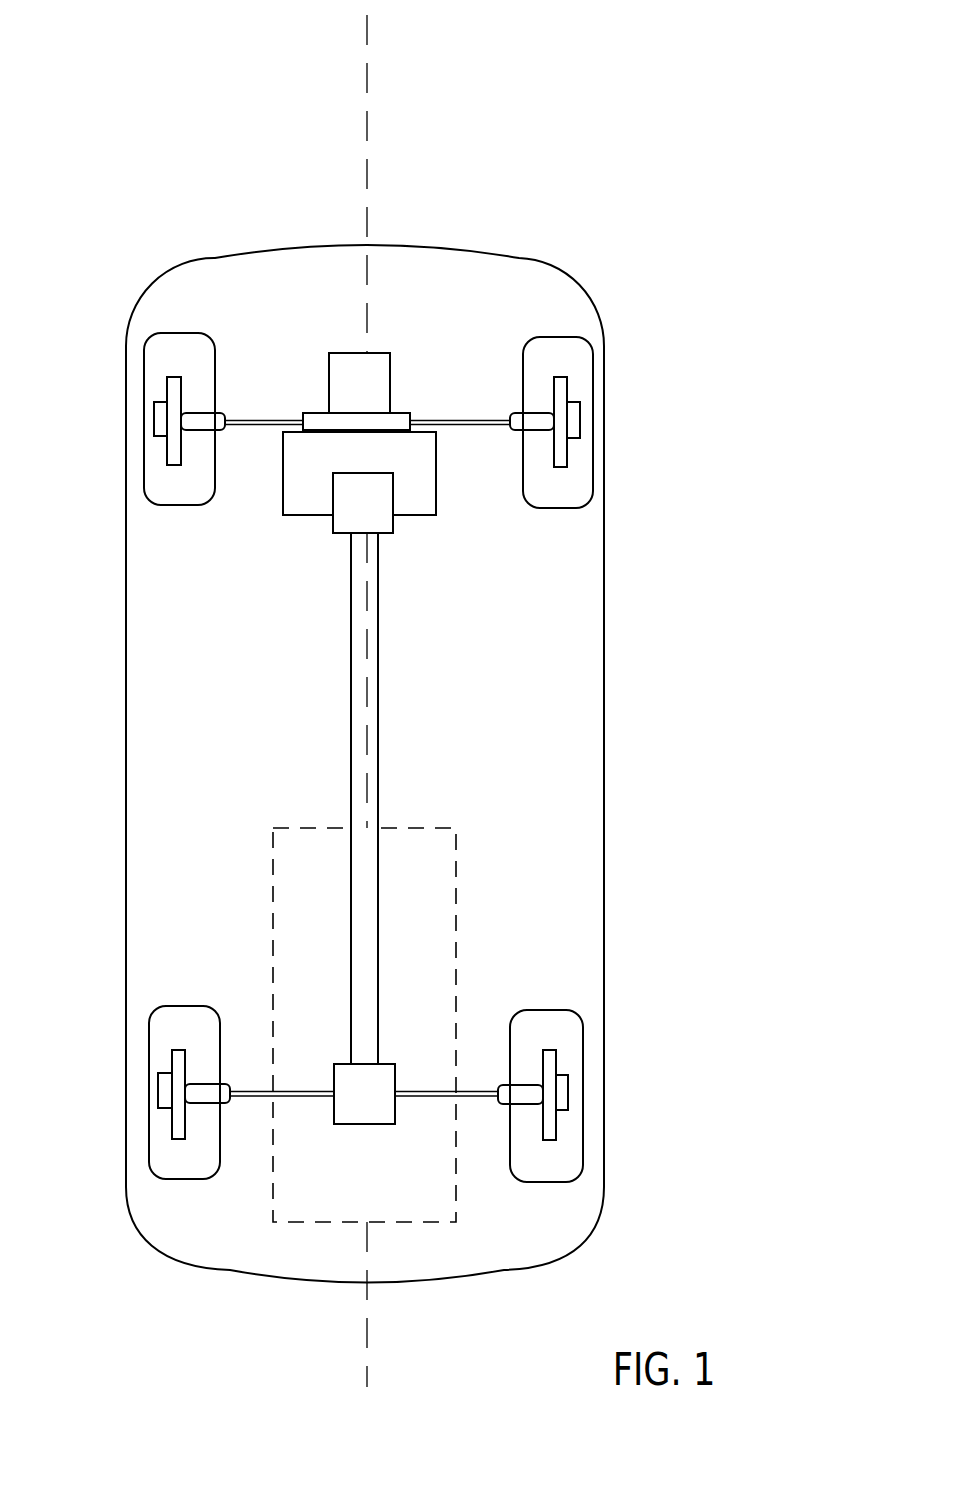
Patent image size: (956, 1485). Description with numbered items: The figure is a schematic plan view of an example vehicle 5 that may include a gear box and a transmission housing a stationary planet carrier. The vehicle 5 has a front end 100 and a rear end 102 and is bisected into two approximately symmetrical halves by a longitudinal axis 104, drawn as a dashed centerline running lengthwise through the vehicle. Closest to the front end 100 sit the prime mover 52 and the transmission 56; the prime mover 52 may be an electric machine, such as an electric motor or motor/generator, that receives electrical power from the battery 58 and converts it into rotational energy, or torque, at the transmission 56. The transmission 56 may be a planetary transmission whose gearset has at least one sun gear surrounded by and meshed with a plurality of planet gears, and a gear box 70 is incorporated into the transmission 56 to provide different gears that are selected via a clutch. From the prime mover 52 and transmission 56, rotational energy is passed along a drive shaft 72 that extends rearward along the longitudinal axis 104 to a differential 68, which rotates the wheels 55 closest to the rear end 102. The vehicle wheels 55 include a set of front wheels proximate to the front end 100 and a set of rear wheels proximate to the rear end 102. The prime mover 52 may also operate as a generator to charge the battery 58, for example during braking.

The vehicle 5 is at (698, 52).
The front end 100 is at (265, 190).
The rear end 102 is at (306, 1302).
The longitudinal axis 104 is at (367, 43).
The prime mover 52 is at (392, 377).
The transmission 56 is at (436, 473).
The gear box 70 is at (378, 527).
The drive shaft 72 is at (378, 688).
The battery 58 is at (413, 910).
The differential 68 is at (333, 1102).
The vehicle wheels 55 is at (566, 477).